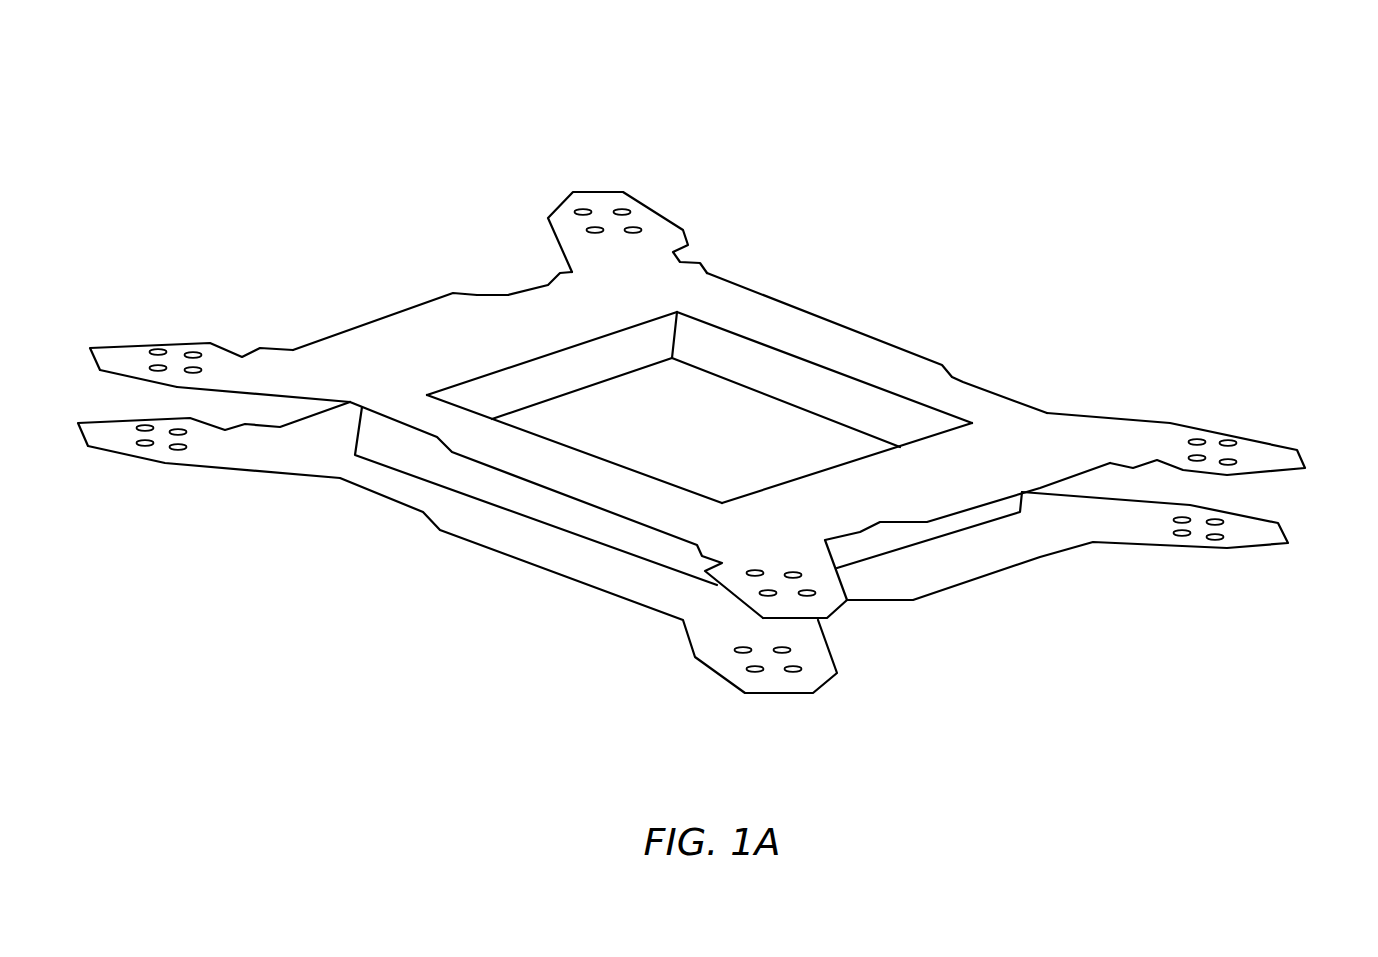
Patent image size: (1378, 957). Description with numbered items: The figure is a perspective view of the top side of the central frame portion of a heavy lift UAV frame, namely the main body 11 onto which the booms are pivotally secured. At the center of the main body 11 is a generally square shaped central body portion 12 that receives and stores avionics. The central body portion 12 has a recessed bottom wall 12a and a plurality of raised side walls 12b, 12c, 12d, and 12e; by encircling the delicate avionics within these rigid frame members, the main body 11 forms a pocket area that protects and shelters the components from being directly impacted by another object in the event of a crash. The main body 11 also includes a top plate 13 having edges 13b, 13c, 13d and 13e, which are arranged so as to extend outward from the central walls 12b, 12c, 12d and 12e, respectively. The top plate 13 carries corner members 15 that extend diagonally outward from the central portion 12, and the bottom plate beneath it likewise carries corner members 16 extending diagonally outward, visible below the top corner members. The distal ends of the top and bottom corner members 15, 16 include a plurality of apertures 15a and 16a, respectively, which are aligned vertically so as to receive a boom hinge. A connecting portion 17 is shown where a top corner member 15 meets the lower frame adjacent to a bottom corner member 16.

The main body 11 is at (720, 414).
The central body portion 12 is at (744, 374).
The recessed bottom wall 12a is at (820, 467).
The raised side wall 12b is at (800, 393).
The raised side wall 12c is at (897, 535).
The raised side wall 12d is at (613, 537).
The raised side wall 12e is at (483, 395).
The top plate 13 is at (1012, 388).
The edge of top plate 13b is at (940, 362).
The edge of top plate 13c is at (1082, 475).
The edge of top plate 13d is at (478, 465).
The edge of top plate 13e is at (388, 314).
The corner member 15 is at (225, 350).
The aperture 15a is at (633, 230).
The corner member 16 is at (237, 472).
The aperture 16a is at (178, 447).
The connecting portion 17 is at (802, 608).